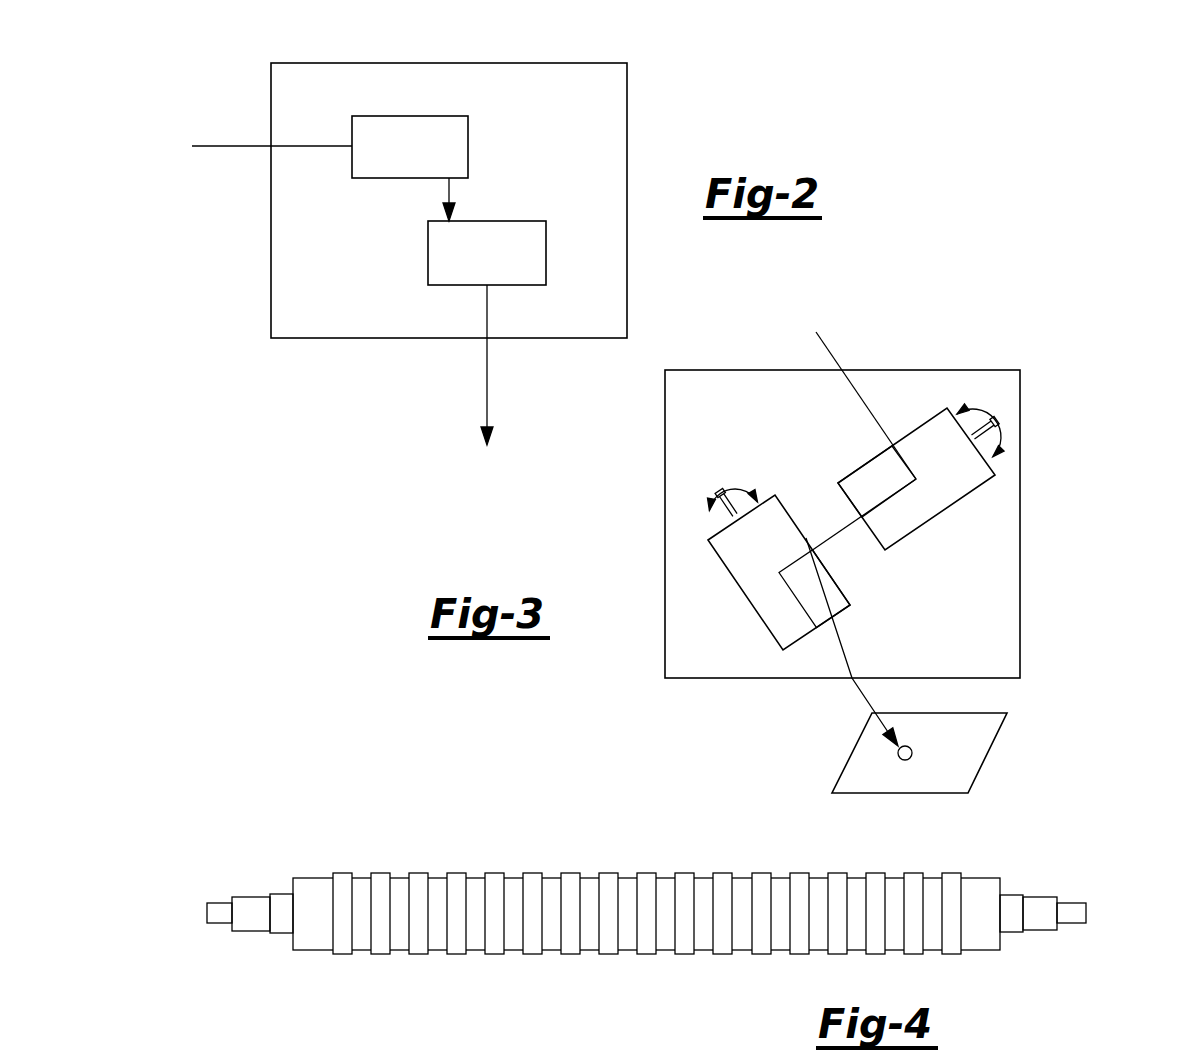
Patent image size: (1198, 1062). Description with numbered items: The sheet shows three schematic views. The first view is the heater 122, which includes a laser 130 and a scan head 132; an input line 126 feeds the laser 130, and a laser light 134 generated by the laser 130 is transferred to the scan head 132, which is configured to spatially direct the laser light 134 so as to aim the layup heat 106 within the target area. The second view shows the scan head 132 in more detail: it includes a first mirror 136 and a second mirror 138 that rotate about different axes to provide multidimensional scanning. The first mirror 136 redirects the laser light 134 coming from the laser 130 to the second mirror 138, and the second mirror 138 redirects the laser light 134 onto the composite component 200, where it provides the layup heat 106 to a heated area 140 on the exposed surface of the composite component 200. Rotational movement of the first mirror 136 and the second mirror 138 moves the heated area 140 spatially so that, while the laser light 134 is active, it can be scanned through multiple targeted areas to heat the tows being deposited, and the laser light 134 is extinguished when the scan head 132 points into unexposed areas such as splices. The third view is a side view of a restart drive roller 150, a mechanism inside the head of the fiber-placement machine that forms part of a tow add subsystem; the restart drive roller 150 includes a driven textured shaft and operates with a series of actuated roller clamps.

In FIG. 2, the layup heat 106 is at (487, 372).
In FIG. 3, the layup heat 106 is at (858, 695).
In FIG. 2, the heater 122 is at (362, 62).
In FIG. 2, the input line 126 is at (232, 146).
In FIG. 2, the laser 130 is at (432, 116).
In FIG. 2, the scan head 132 is at (512, 221).
In FIG. 3, the scan head 132 is at (757, 370).
In FIG. 2, the laser light 134 is at (447, 190).
In FIG. 3, the laser light 134 is at (830, 350).
In FIG. 3, the first mirror 136 is at (870, 468).
In FIG. 3, the second mirror 138 is at (752, 605).
In FIG. 3, the heated area 140 is at (897, 756).
In FIG. 4, the restart drive roller 150 is at (455, 873).
In FIG. 3, the composite component 200 is at (1000, 735).